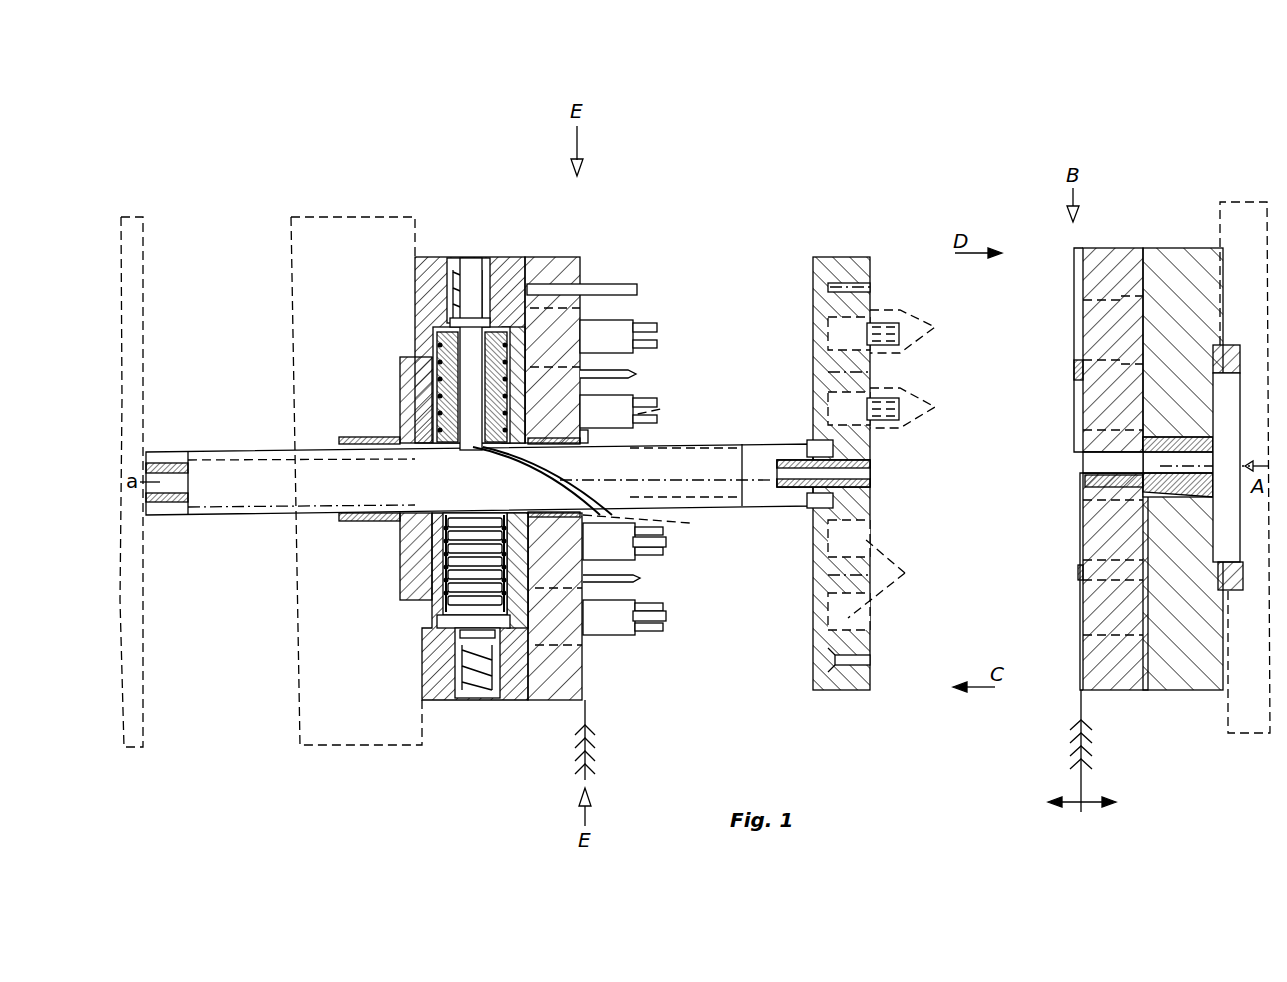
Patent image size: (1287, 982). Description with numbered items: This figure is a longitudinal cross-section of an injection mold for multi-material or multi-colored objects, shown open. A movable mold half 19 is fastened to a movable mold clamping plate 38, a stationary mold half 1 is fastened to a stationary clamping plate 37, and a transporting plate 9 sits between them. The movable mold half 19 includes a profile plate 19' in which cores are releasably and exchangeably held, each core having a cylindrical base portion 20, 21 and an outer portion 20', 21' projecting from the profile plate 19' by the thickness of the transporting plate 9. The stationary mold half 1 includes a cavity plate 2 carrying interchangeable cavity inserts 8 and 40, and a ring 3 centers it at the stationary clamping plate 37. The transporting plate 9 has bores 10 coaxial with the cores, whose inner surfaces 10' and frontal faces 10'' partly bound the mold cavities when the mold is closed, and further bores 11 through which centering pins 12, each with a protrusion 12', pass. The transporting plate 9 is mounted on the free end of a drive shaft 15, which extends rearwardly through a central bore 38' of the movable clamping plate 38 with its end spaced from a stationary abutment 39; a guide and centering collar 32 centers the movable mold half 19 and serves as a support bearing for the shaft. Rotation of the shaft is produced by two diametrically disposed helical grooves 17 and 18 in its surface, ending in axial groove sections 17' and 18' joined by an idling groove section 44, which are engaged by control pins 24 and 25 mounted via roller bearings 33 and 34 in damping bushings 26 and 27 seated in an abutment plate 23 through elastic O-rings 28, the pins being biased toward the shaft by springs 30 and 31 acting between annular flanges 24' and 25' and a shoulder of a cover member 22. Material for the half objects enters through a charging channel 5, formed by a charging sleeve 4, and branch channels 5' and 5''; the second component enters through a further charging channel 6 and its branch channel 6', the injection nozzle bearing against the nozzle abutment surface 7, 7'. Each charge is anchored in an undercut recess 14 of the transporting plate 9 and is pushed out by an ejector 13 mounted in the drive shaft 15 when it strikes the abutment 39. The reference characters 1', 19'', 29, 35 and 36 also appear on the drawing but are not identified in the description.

The stationary mold half 1 is at (1153, 166).
The housing block 1' is at (1183, 439).
The cavity plate 2 is at (1126, 265).
The ring 3 is at (1230, 346).
The charging sleeve 4 is at (1210, 446).
The charging channel 5 is at (1173, 461).
The branch channel 5' is at (1053, 550).
The branch channel 5'' is at (1054, 577).
The charging channel 6 is at (1046, 295).
The branch channel 6' is at (1053, 382).
The nozzle abutment surface 7 is at (1092, 442).
The nozzle abutment surface 7' is at (838, 442).
The cavity insert 8 is at (1100, 410).
The transporting plate 9 is at (870, 671).
The bores 10 is at (891, 579).
The inner surfaces 10' is at (919, 408).
The frontal faces 10'' is at (921, 331).
The bores 11 is at (830, 287).
The centering pins 12 is at (621, 391).
The protrusion 12' is at (678, 401).
The ejector 13 is at (166, 462).
The undercut recess 14 is at (868, 476).
The drive shaft 15 is at (790, 497).
The helical groove 17 is at (618, 453).
The axial groove section 17' is at (479, 482).
The helical groove 18 is at (597, 458).
The axial groove section 18' is at (510, 480).
The movable mold half 19 is at (472, 169).
The profile plate 19' is at (555, 635).
The housing lower edge 19'' is at (661, 704).
The cylindrical base portion 20 is at (646, 545).
The outer portion 20' is at (655, 584).
The cylindrical base portion 21 is at (647, 308).
The outer portion 21' is at (678, 328).
The cover member 22 is at (515, 692).
The abutment plate 23 is at (445, 620).
The control pin 24 is at (421, 385).
The annular flange 24' is at (411, 290).
The control pin 25 is at (382, 620).
The annular flange 25' is at (418, 663).
The damping bushing 26 is at (406, 370).
The damping bushing 27 is at (427, 585).
The elastic O-rings 28 is at (450, 326).
The spring seat 29 is at (437, 598).
The spring 30 is at (475, 262).
The spring 31 is at (458, 672).
The guide and centering collar 32 is at (400, 418).
The roller bearing 33 is at (455, 448).
The roller bearing 34 is at (547, 257).
The spring chamber 35 is at (464, 690).
The upper housing block 36 is at (447, 266).
The stationary clamping plate 37 is at (1238, 215).
The movable mold clamping plate 38 is at (356, 453).
The central bore 38' is at (287, 538).
The stationary abutment 39 is at (124, 348).
The cavity insert 40 is at (1110, 605).
The idling groove section 44 is at (621, 464).